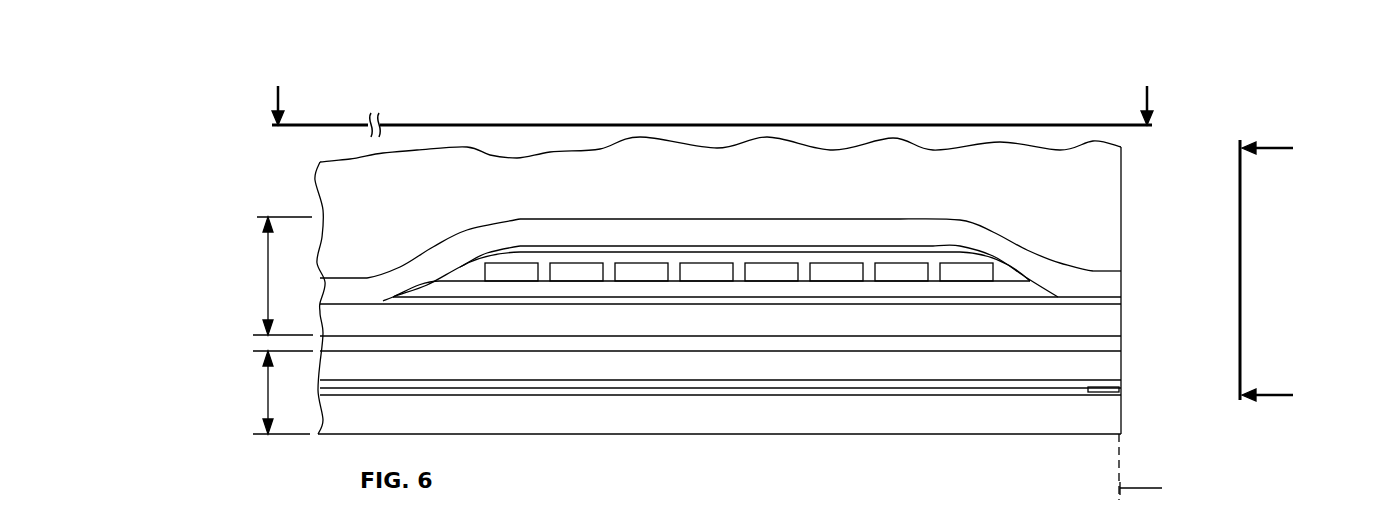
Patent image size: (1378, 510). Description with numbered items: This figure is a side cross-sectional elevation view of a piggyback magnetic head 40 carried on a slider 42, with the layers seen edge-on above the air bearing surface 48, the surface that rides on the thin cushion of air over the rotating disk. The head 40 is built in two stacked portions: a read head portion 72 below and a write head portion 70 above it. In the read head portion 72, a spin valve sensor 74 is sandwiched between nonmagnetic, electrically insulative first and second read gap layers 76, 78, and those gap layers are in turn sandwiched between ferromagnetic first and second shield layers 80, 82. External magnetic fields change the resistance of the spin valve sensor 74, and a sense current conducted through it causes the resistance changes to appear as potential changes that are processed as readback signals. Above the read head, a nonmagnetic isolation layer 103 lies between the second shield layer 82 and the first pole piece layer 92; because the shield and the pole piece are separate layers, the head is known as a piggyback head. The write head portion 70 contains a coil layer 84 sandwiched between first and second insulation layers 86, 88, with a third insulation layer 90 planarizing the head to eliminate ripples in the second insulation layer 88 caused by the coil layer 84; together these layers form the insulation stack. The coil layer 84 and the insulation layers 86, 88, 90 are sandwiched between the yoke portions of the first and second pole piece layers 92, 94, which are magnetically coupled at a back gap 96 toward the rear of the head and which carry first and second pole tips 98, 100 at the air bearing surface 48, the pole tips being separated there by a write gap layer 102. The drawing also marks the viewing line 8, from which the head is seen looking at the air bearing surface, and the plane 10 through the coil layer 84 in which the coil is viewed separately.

The magnetic disk 10 is at (711, 108).
The section line for FIG. 8 is at (1278, 271).
The magnetic head 40 is at (300, 168).
The slider 42 is at (1105, 178).
The air bearing surface 48 is at (1179, 467).
The write head portion 70 is at (268, 285).
The read head portion 72 is at (268, 393).
The spin valve sensor 74 is at (1120, 390).
The first read gap layer 76 is at (790, 397).
The second read gap layer 78 is at (756, 380).
The first shield layer 80 is at (889, 420).
The second shield layer 82 is at (992, 370).
The coil layer 84 is at (770, 268).
The first insulation layer 86 is at (678, 292).
The second insulation layer 88 is at (1008, 272).
The third insulation layer 90 is at (550, 248).
The first pole piece layer 92 is at (1038, 325).
The second pole piece layer 94 is at (903, 230).
The back gap 96 is at (361, 303).
The first pole tip 98 is at (1120, 323).
The second pole tip 100 is at (1115, 279).
The write gap layer 102 is at (1118, 298).
The nonmagnetic isolation layer 103 is at (946, 343).